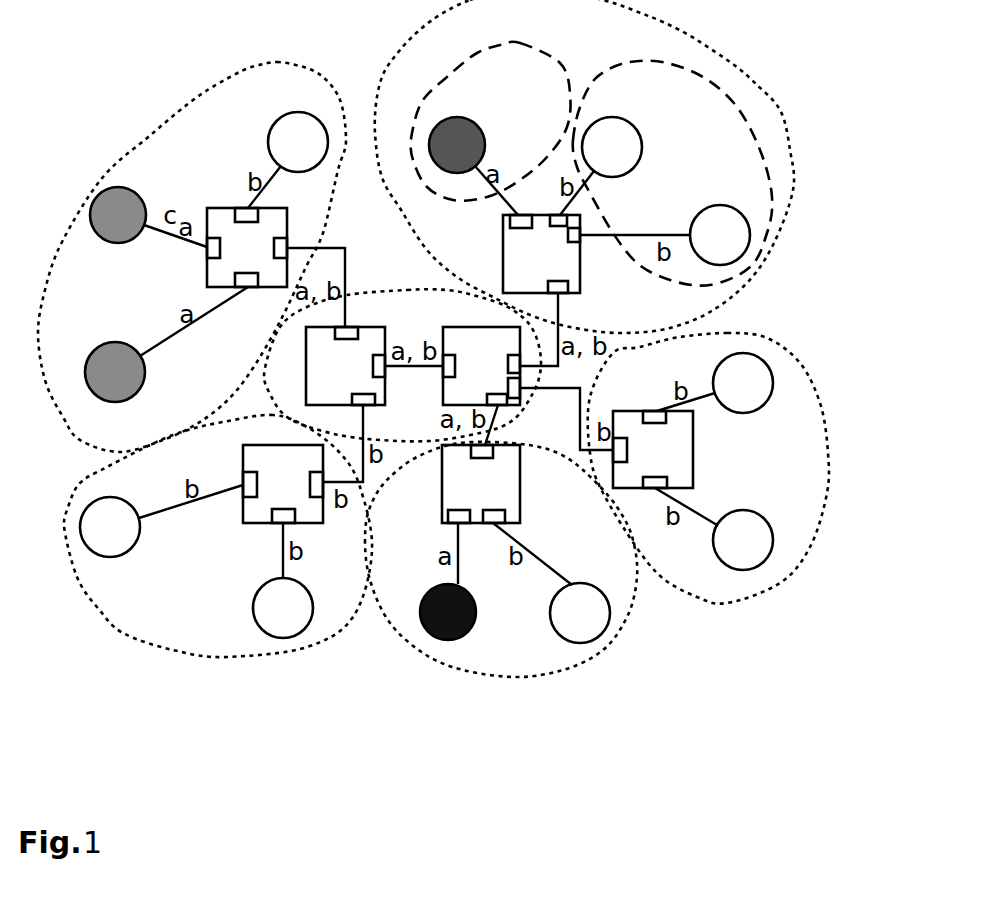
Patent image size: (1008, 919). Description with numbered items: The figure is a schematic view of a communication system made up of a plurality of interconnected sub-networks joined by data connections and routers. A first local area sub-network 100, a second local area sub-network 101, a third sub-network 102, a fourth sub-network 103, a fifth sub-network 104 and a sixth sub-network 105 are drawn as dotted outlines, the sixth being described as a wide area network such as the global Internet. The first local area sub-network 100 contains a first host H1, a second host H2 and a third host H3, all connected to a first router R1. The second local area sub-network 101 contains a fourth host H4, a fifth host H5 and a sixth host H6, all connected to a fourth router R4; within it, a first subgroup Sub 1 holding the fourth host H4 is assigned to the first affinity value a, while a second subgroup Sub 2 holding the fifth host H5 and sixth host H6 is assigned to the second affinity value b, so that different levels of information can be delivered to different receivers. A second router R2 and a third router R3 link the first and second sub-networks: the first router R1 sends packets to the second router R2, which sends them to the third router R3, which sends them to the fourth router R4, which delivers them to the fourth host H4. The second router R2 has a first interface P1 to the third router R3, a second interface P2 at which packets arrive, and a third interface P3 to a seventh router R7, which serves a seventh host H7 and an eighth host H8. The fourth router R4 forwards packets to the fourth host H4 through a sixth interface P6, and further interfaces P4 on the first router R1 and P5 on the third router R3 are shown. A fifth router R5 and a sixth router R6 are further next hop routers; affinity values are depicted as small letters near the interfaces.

The first local area sub-network 100 is at (223, 103).
The second local area sub-network 101 is at (708, 58).
The third sub-network 102 is at (790, 400).
The fourth sub-network 103 is at (593, 657).
The fifth sub-network 104 is at (200, 640).
The sixth sub-network 105 is at (440, 293).
The first subgroup Sub 1 is at (450, 88).
The second subgroup Sub 2 is at (743, 157).
The first host H1 is at (124, 198).
The second host H2 is at (113, 356).
The third host H3 is at (298, 127).
The fourth host H4 is at (472, 134).
The fifth host H5 is at (617, 133).
The sixth host H6 is at (720, 219).
The seventh host H7 is at (110, 542).
The eighth host H8 is at (261, 608).
The first router R1 is at (285, 247).
The second router R2 is at (371, 364).
The third router R3 is at (481, 366).
The fourth router R4 is at (512, 250).
The fifth router R5 is at (653, 449).
The sixth router R6 is at (481, 484).
The seventh router R7 is at (283, 484).
The first interface P1 is at (385, 368).
The second interface P2 is at (347, 333).
The third interface P3 is at (368, 403).
The fourth interface P4 is at (287, 243).
The fifth interface P5 is at (515, 360).
The sixth interface P6 is at (510, 220).